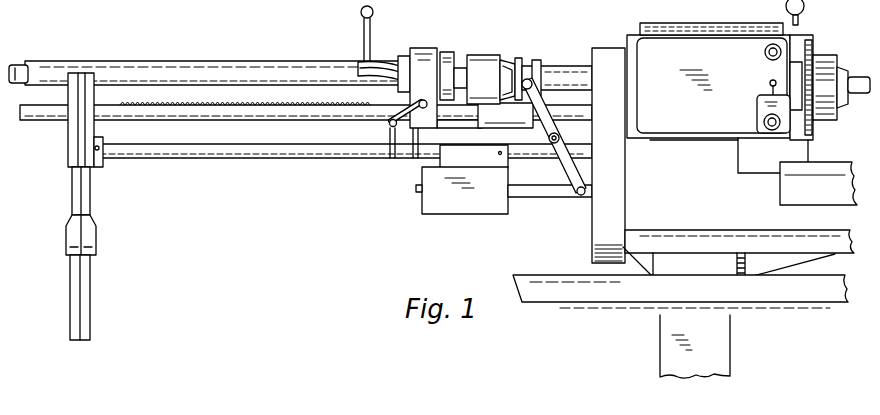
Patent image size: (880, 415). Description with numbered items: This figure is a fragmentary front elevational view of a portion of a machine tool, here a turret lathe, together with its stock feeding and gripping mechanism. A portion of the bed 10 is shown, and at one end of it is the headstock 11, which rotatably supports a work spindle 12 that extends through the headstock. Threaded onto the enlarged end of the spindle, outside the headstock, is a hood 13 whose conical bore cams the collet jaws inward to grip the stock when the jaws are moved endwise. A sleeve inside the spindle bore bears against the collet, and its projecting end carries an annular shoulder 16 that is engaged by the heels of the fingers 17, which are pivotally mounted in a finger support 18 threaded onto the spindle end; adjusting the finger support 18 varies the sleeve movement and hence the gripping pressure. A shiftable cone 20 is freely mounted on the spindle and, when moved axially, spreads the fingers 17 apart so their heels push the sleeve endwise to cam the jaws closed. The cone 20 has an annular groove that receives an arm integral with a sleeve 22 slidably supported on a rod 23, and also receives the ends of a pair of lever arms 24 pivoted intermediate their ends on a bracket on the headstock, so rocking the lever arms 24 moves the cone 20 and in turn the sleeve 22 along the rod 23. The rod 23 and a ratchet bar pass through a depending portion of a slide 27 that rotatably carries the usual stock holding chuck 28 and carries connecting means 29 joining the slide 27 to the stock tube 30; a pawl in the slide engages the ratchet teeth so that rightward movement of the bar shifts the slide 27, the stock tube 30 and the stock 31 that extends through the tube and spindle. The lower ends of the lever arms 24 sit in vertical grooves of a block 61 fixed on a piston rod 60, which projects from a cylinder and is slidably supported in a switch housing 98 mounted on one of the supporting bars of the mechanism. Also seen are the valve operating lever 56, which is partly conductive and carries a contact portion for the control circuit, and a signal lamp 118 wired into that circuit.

The bed 10 is at (838, 242).
The headstock 11 is at (692, 45).
The work spindle 12 is at (560, 66).
The hood 13 is at (828, 56).
The annular shoulder 16 is at (51, 206).
The fingers 17 is at (510, 58).
The finger support 18 is at (478, 56).
The shiftable cone 20 is at (537, 60).
The sleeve 22 is at (490, 125).
The rod 23 is at (240, 115).
The lever arms 24 is at (562, 144).
The slide 27 is at (424, 48).
The stock holding chuck 28 is at (448, 52).
The connecting means 29 is at (372, 52).
The stock tube 30 is at (240, 61).
The stock 31 is at (14, 65).
The valve operating lever 56 is at (768, 84).
The piston rod 60 is at (535, 190).
The block 61 is at (576, 195).
The switch housing 98 is at (455, 200).
The signal lamp 118 is at (764, 52).